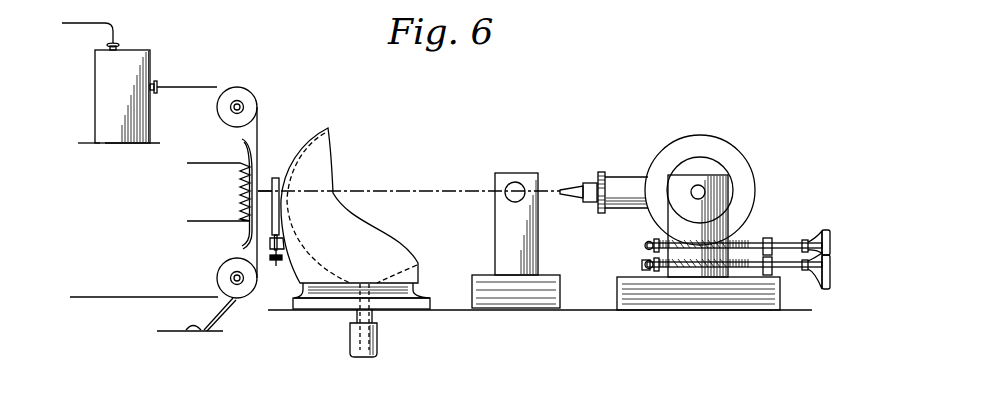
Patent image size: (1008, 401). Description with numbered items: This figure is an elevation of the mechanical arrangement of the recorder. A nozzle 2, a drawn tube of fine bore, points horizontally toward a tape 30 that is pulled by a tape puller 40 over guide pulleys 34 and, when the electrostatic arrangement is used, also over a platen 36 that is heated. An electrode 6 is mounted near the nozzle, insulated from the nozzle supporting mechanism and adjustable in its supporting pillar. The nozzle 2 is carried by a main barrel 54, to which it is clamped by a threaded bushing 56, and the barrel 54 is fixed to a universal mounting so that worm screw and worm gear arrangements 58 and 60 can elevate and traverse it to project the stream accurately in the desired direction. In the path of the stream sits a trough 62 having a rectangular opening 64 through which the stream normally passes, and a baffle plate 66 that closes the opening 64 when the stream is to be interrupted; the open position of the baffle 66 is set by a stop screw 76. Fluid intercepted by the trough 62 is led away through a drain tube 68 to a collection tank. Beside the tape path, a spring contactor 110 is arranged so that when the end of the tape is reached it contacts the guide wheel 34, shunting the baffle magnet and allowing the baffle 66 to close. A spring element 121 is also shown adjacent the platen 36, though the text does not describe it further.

The tape puller 40 is at (150, 60).
The tape 30 is at (198, 87).
The guide pulleys 34 is at (256, 103).
The platen 36 is at (241, 141).
The spring 121 is at (218, 192).
The baffle plate 66 is at (273, 178).
The rectangular opening 64 is at (275, 200).
The stop screw 76 is at (276, 262).
The trough 62 is at (333, 161).
The drain tube 68 is at (377, 348).
The spring contactor 110 is at (223, 314).
The electrode 6 is at (517, 181).
The nozzle 2 is at (566, 191).
The main barrel 54 is at (621, 176).
The threaded bushing 56 is at (487, 268).
The worm screw and worm gear arrangement 58 is at (741, 241).
The worm screw and worm gear arrangement 60 is at (636, 266).